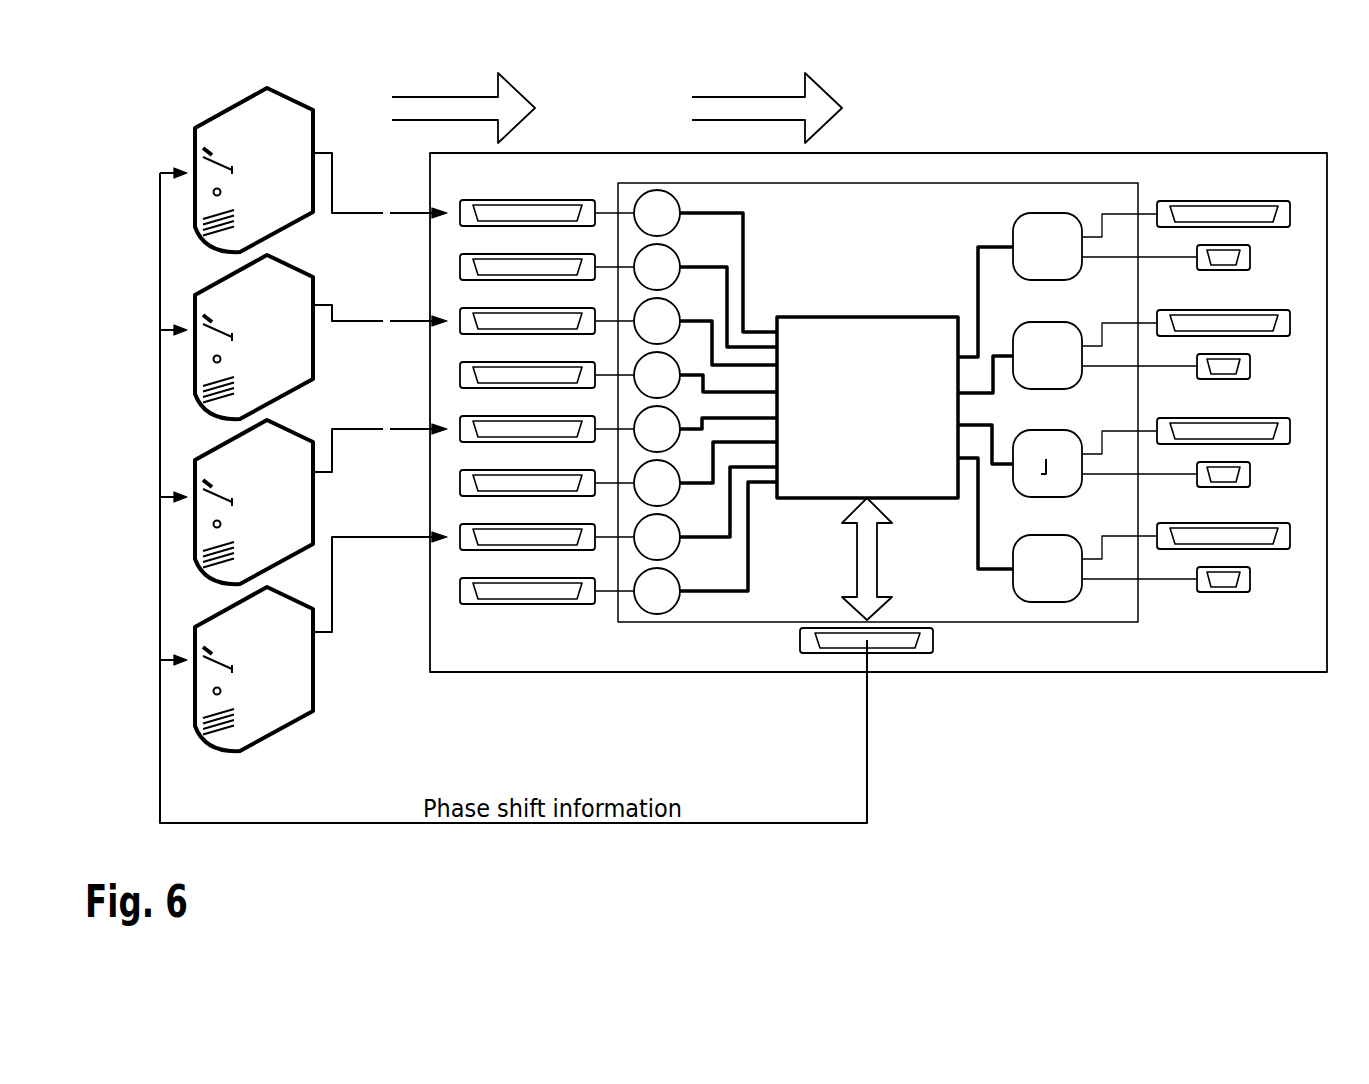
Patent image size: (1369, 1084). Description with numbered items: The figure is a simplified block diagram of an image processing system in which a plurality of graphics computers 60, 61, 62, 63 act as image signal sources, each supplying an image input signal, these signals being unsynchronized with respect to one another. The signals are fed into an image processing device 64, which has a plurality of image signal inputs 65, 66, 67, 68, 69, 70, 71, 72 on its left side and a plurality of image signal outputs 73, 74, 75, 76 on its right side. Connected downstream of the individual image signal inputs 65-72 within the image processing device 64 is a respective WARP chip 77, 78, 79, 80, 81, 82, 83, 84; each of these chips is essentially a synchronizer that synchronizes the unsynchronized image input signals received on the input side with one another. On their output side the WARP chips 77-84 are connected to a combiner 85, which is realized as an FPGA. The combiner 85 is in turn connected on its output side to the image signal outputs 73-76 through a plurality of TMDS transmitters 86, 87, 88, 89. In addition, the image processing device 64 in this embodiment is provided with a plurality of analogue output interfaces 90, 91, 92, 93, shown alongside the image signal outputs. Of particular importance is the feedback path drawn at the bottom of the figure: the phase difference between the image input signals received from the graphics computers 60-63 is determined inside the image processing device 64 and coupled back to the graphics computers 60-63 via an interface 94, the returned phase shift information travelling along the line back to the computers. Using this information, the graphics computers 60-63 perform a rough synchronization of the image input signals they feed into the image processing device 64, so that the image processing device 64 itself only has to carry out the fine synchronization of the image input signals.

The graphics computer 60 is at (302, 103).
The graphics computer 61 is at (302, 270).
The graphics computer 62 is at (315, 513).
The graphics computer 63 is at (315, 677).
The image processing device 64 is at (902, 158).
The image signal input 65 is at (487, 199).
The image signal input 66 is at (487, 253).
The image signal input 67 is at (487, 307).
The image signal input 68 is at (487, 361).
The image signal input 69 is at (487, 415).
The image signal input 70 is at (487, 469).
The image signal input 71 is at (487, 523).
The image signal input 72 is at (487, 577).
The image signal output 73 is at (1253, 200).
The image signal output 74 is at (1265, 310).
The image signal output 75 is at (1265, 418).
The image signal output 76 is at (1265, 523).
The WARP chip 77 is at (675, 222).
The WARP chip 78 is at (675, 276).
The WARP chip 79 is at (672, 334).
The WARP chip 80 is at (668, 393).
The WARP chip 81 is at (672, 442).
The WARP chip 82 is at (675, 492).
The WARP chip 83 is at (675, 546).
The WARP chip 84 is at (670, 612).
The combiner 85 is at (873, 318).
The TMDS transmitter 86 is at (1015, 234).
The TMDS transmitter 87 is at (1042, 322).
The TMDS transmitter 88 is at (1047, 430).
The TMDS transmitter 89 is at (1042, 535).
The analogue output interface 90 is at (1195, 266).
The analogue output interface 91 is at (1195, 375).
The analogue output interface 92 is at (1195, 482).
The analogue output interface 93 is at (1195, 589).
The interface 94 is at (933, 639).